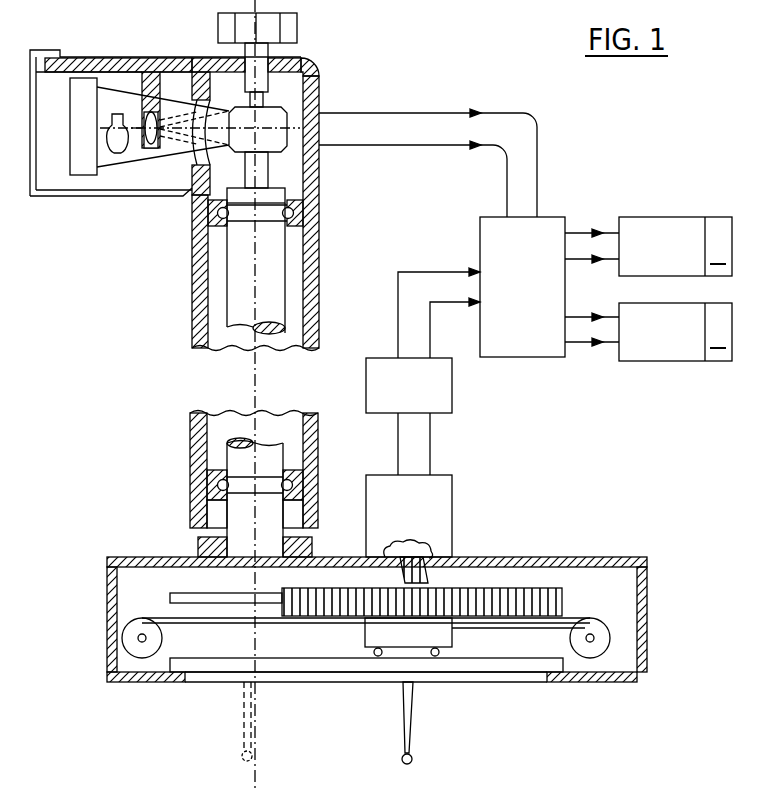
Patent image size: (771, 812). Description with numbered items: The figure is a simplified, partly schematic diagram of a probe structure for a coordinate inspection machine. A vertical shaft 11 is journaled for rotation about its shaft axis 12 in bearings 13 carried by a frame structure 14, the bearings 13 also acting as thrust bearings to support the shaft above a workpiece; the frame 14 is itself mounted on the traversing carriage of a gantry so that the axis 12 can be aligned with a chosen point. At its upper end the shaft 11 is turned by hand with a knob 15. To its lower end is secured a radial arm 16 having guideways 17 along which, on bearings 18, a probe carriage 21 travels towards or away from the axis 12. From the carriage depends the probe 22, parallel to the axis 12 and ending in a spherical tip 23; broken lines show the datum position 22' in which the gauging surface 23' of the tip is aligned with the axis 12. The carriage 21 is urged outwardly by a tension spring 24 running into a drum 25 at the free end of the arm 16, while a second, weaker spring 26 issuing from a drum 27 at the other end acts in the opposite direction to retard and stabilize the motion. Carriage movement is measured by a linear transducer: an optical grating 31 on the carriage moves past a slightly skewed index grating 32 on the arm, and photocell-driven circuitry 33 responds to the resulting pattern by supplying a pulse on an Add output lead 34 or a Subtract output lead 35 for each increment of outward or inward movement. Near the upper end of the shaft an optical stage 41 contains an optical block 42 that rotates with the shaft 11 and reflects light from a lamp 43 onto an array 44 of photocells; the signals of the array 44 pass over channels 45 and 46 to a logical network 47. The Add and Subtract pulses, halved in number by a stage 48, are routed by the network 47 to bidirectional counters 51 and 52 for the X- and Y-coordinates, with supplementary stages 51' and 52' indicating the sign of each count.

The vertical shaft 11 is at (235, 277).
The shaft axis 12 is at (250, 372).
The bearings 13 is at (300, 222).
The frame structure 14 is at (318, 78).
The knob 15 is at (297, 30).
The radial arm 16 is at (562, 557).
The guideways 17 is at (228, 597).
The bearings 18 is at (375, 651).
The probe carriage 21 is at (452, 636).
The probe 22 is at (429, 717).
The datum position of probe 22' is at (214, 716).
The spherical tip 23 is at (428, 769).
The gauging surface 23' is at (222, 772).
The tension spring 24 is at (518, 628).
The drum 25 is at (596, 633).
The second spring 26 is at (298, 625).
The drum 27 is at (142, 618).
The optical grating 31 is at (540, 597).
The index grating 32 is at (427, 575).
The photocell-driven circuitry 33 is at (453, 492).
The Add output lead 34 is at (398, 452).
The Subtract output lead 35 is at (430, 455).
The optical stage 41 is at (113, 78).
The optical block 42 is at (288, 135).
The lamp 43 is at (118, 117).
The array of photocells 44 is at (76, 143).
The channel 45 is at (441, 112).
The channel 46 is at (411, 146).
The logical network 47 is at (548, 216).
The halving stage 48 is at (452, 383).
The bidirectional counter 51 is at (675, 219).
The supplementary stage 51' is at (711, 213).
The bidirectional counter 52 is at (675, 353).
The supplementary stage 52' is at (731, 356).